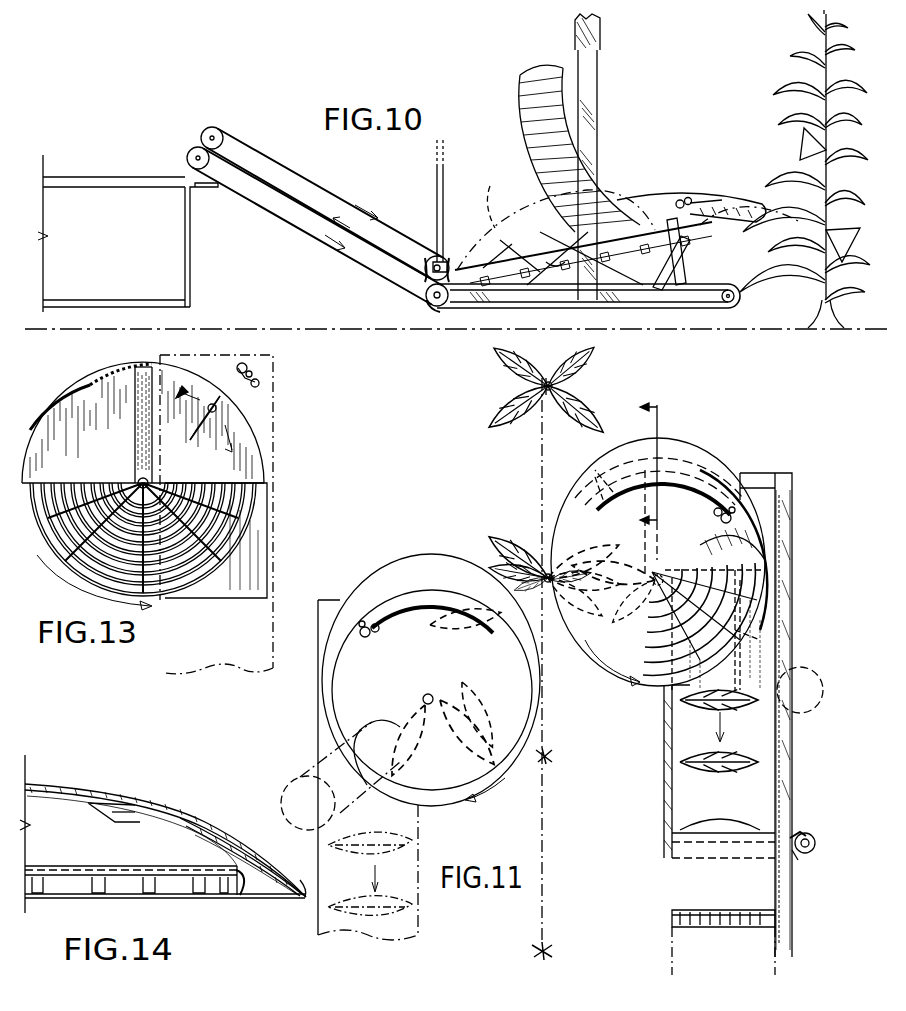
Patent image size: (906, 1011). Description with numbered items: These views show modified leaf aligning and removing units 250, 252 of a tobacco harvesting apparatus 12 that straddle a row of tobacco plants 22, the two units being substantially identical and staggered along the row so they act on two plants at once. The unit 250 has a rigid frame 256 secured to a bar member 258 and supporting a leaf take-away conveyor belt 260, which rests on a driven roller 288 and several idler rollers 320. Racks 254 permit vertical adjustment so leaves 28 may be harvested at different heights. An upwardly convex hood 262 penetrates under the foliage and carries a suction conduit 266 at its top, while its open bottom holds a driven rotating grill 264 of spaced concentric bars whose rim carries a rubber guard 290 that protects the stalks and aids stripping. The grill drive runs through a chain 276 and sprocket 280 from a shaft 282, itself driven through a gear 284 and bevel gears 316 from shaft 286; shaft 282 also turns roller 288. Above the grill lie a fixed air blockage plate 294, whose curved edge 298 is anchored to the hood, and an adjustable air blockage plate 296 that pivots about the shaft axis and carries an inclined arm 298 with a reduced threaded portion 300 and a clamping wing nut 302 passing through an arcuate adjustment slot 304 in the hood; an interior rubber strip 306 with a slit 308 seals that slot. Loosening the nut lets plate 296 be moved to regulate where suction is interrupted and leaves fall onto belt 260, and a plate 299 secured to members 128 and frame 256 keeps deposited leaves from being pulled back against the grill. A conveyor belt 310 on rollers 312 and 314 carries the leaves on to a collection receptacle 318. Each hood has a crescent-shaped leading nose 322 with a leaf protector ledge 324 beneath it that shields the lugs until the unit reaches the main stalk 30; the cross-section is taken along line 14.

In FIG. 10, the harvesting apparatus 12 is at (618, 168).
In FIG. 11, the section line 14 is at (657, 407).
In FIG. 10, the tobacco plants 22 is at (792, 80).
In FIG. 11, the tobacco leaves 28 is at (500, 398).
In FIG. 11, the main stalk 30 is at (556, 383).
In FIG. 10, the members 128 is at (560, 244).
In FIG. 10, the leaf aligning and removing unit 250 is at (740, 199).
In FIG. 11, the leaf aligning and removing unit 250 is at (795, 573).
In FIG. 10, the leaf aligning and removing unit 252 is at (628, 218).
In FIG. 11, the leaf aligning and removing unit 252 is at (318, 728).
In FIG. 10, the racks 254 is at (597, 66).
In FIG. 10, the rigid frame 256 is at (685, 277).
In FIG. 10, the bar member 258 is at (597, 143).
In FIG. 10, the leaf take-away conveyor belt 260 is at (250, 208).
In FIG. 11, the leaf take-away conveyor belt 260 is at (765, 803).
In FIG. 10, the hood 262 is at (666, 200).
In FIG. 11, the hood 262 is at (530, 680).
In FIG. 14, the hood 262 is at (105, 790).
In FIG. 13, the rotating grill 264 is at (247, 511).
In FIG. 11, the rotating grill 264 is at (755, 599).
In FIG. 10, the suction conduit 266 is at (527, 100).
In FIG. 11, the suction conduit 266 is at (300, 778).
In FIG. 11, the chain 276 is at (778, 729).
In FIG. 11, the sprocket 280 is at (790, 858).
In FIG. 10, the shaft 282 is at (432, 306).
In FIG. 11, the shaft 282 is at (680, 848).
In FIG. 10, the gear 284 is at (425, 296).
In FIG. 11, the gear 284 is at (816, 844).
In FIG. 10, the shaft 286 is at (437, 192).
In FIG. 11, the shaft 286 is at (804, 842).
In FIG. 11, the driven roller 288 is at (690, 860).
In FIG. 14, the rubber guard 290 is at (242, 896).
In FIG. 13, the fixed air blockage plate 294 is at (105, 380).
In FIG. 11, the fixed air blockage plate 294 is at (593, 475).
In FIG. 13, the adjustable air blockage plate 296 is at (245, 440).
In FIG. 11, the adjustable air blockage plate 296 is at (750, 555).
In FIG. 13, the curved edge 298 is at (65, 393).
In FIG. 10, the plate 299 is at (670, 236).
In FIG. 13, the plate 299 is at (262, 550).
In FIG. 11, the plate 299 is at (770, 628).
In FIG. 13, the reduced threaded portion 300 is at (218, 396).
In FIG. 13, the clamping wing nut 302 is at (260, 380).
In FIG. 11, the arcuate adjustment slot 304 is at (388, 605).
In FIG. 14, the interior rubber strip 306 is at (100, 812).
In FIG. 14, the slit 308 is at (132, 818).
In FIG. 10, the conveyor belt 310 is at (305, 178).
In FIG. 10, the roller 312 is at (216, 128).
In FIG. 10, the roller 314 is at (430, 256).
In FIG. 10, the bevel gears 316 is at (452, 258).
In FIG. 10, the collection receptacle 318 is at (113, 182).
In FIG. 10, the idler rollers 320 is at (190, 162).
In FIG. 10, the nose 322 is at (740, 214).
In FIG. 11, the nose 322 is at (420, 560).
In FIG. 14, the nose 322 is at (250, 845).
In FIG. 14, the leaf protector ledge 324 is at (240, 896).